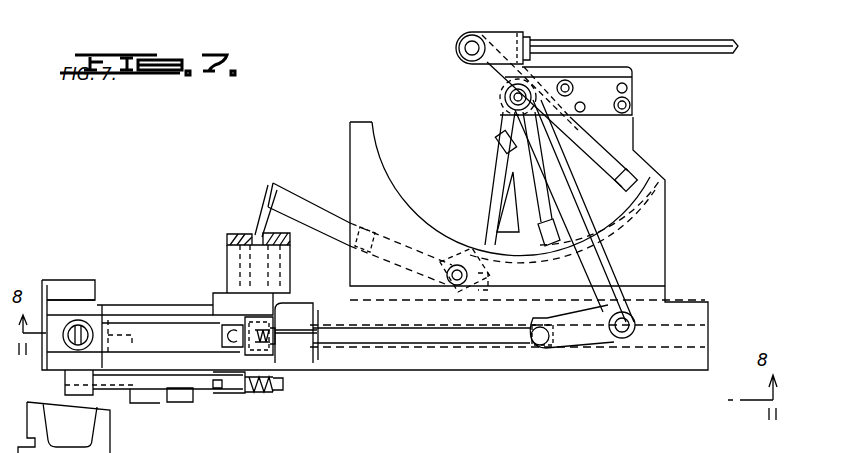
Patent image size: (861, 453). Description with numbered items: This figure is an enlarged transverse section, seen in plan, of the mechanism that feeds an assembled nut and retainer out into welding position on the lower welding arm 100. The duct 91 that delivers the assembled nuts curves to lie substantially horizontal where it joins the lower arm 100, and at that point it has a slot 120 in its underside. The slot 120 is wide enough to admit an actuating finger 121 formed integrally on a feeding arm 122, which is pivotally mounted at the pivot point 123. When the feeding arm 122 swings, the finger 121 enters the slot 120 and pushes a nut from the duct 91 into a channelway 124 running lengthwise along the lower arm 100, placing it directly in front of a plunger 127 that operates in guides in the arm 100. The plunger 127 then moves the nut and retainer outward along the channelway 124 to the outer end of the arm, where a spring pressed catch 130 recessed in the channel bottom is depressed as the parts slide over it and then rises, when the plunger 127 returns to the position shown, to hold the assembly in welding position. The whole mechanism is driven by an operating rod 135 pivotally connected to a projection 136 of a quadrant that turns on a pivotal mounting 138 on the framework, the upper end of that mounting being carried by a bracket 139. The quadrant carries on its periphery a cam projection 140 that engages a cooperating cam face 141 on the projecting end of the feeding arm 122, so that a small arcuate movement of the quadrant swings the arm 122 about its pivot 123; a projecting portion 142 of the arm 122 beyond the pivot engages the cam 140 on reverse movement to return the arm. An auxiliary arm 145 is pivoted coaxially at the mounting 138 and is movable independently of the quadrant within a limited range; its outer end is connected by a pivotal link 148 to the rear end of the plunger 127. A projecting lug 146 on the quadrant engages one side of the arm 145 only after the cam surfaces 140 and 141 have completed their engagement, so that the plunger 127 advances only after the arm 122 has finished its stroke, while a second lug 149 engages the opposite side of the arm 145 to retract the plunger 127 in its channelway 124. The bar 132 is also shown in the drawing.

The duct 91 is at (227, 240).
The lower welding arm 100 is at (297, 352).
The slot 120 is at (245, 235).
The actuating finger 121 is at (263, 158).
The feeding arm 122 is at (333, 168).
The pivot point 123 is at (448, 272).
The channelway 124 is at (148, 333).
The plunger 127 is at (420, 340).
The spring pressed catch 130 is at (85, 325).
The actuating bar 132 is at (640, 162).
The operating rod 135 is at (655, 40).
The projection 136 is at (476, 66).
The pivotal mounting 138 is at (511, 99).
The bracket 139 is at (628, 97).
The cam projection 140 is at (466, 243).
The cam face 141 is at (443, 247).
The projecting portion 142 is at (478, 285).
The auxiliary arm 145 is at (600, 268).
The projecting lug 146 is at (650, 186).
The pivotal link 148 is at (578, 338).
The lug 149 is at (550, 248).